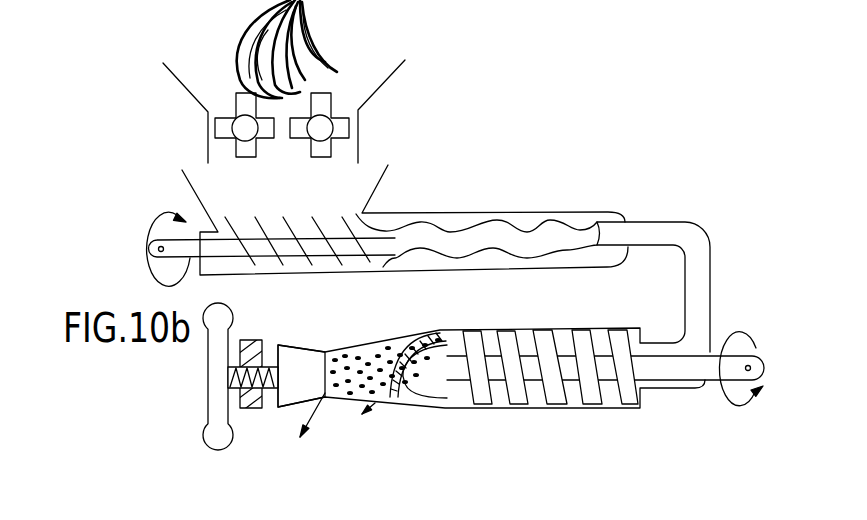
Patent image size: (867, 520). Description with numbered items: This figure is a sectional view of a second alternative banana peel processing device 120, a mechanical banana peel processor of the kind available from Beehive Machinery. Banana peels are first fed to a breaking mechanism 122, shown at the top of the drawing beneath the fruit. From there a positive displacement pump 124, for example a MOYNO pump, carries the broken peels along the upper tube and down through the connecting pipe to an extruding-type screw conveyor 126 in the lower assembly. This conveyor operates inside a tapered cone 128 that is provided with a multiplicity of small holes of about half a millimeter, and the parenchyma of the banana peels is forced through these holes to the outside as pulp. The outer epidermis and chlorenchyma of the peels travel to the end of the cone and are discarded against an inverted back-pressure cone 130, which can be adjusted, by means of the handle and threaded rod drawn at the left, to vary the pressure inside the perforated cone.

The banana peel processing device 120 is at (437, 232).
The breaking mechanism 122 is at (227, 83).
The positive displacement pump 124 is at (527, 212).
The extruding-type screw conveyor 126 is at (558, 395).
The tapered cone 128 is at (387, 342).
The inverted back-pressure cone 130 is at (285, 355).